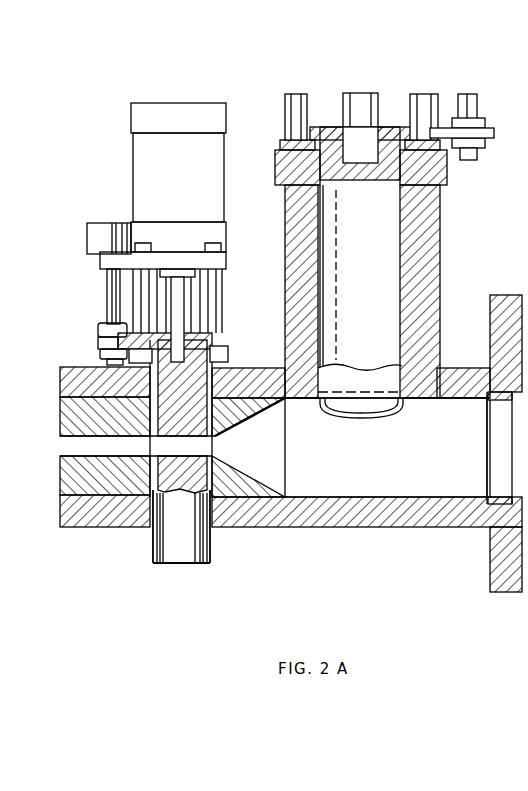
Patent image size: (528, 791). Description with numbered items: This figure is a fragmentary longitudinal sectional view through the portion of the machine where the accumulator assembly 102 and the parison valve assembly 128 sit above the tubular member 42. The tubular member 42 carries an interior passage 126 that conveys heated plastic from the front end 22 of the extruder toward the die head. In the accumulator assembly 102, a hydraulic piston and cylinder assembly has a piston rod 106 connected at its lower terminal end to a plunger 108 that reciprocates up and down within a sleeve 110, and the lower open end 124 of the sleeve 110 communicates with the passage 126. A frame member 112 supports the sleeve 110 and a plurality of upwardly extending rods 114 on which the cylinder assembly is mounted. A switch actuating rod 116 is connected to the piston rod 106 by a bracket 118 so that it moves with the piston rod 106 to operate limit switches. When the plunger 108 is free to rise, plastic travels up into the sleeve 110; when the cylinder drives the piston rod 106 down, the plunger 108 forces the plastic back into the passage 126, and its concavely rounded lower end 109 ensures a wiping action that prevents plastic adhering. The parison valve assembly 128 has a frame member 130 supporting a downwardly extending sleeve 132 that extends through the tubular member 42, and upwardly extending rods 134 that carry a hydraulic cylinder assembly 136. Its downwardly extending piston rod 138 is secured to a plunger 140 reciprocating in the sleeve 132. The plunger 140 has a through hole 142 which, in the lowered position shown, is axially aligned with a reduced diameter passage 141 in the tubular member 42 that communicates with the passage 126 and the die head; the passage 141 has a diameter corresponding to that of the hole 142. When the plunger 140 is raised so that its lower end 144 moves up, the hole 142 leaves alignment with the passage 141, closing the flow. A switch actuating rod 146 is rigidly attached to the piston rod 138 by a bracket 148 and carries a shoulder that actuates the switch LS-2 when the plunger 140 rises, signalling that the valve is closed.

The front end 22 is at (505, 498).
The tubular member 42 is at (398, 517).
The accumulator assembly 102 is at (449, 85).
The piston rod 106 is at (354, 101).
The plunger 108 is at (364, 283).
The lower end 109 is at (376, 406).
The sleeve 110 is at (408, 254).
The frame member 112 is at (430, 294).
The rods 114 is at (301, 101).
The switch actuating rod 116 is at (470, 104).
The bracket 118 is at (487, 141).
The lower open end 124 is at (322, 412).
The interior passage 126 is at (302, 495).
The parison valve assembly 128 is at (100, 158).
The frame member 130 is at (228, 372).
The sleeve 132 is at (212, 516).
The rods 134 is at (218, 311).
The hydraulic cylinder assembly 136 is at (191, 110).
The piston rod 138 is at (182, 297).
The plunger 140 is at (166, 525).
The reduced diameter passage 141 is at (68, 448).
The through hole 142 is at (191, 453).
The lower end 144 is at (178, 559).
The switch actuating rod 146 is at (115, 296).
The bracket 148 is at (98, 341).
The switch LS-2 is at (95, 237).